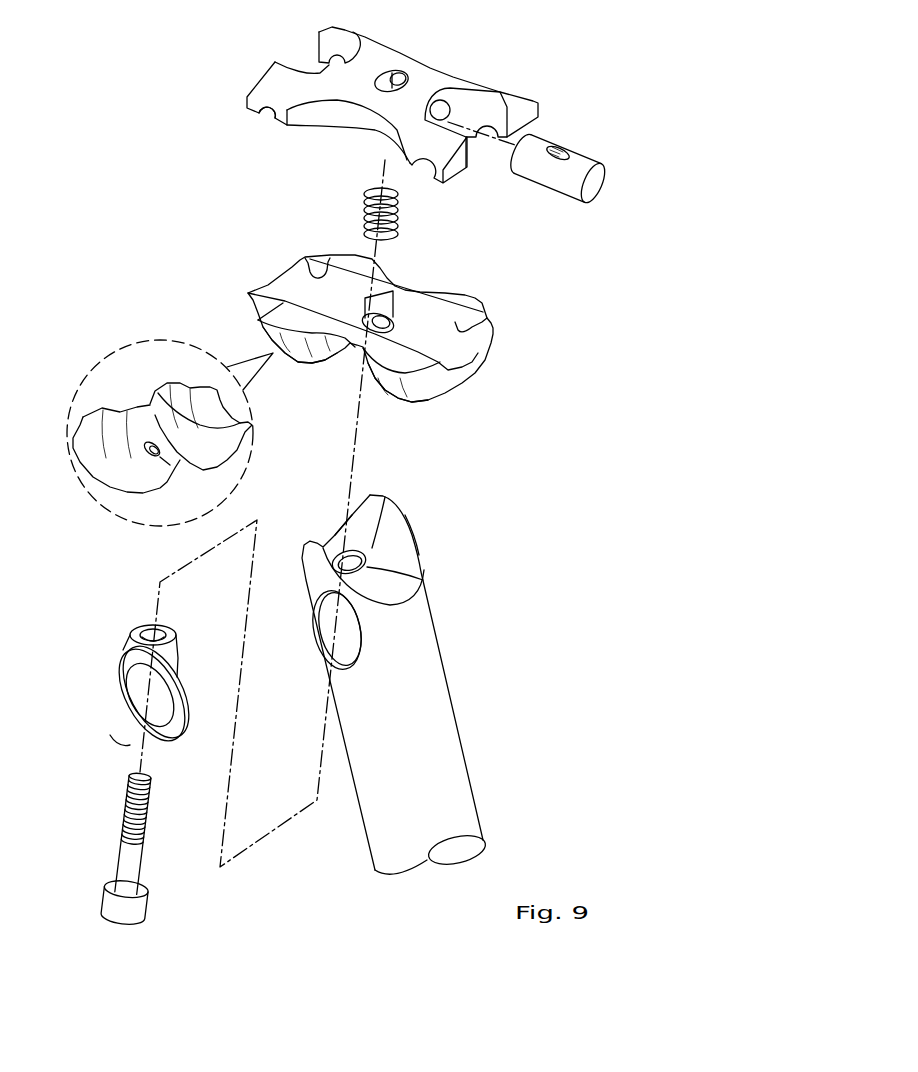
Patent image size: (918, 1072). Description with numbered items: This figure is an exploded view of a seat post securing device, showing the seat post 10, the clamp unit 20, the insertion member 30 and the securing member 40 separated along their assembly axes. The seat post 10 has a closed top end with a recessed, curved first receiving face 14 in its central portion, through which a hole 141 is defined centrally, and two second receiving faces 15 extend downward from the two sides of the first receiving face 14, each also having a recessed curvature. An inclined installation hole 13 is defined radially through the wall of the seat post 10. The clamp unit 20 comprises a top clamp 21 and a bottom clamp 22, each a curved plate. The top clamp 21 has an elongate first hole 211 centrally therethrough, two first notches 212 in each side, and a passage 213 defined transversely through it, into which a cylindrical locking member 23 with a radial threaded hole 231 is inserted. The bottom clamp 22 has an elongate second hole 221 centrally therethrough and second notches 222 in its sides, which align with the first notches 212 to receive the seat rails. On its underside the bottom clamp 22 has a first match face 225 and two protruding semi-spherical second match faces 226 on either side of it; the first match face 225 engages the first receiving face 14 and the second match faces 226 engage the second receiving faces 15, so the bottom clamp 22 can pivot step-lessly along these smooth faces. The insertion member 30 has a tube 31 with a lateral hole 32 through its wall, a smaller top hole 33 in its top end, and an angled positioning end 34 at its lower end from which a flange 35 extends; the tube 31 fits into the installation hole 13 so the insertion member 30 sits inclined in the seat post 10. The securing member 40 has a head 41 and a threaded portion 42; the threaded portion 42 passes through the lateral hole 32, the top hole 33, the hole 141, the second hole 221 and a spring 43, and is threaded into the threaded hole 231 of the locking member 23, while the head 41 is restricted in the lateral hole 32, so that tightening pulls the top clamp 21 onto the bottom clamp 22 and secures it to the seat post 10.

The seat post 10 is at (447, 737).
The installation hole 13 is at (330, 613).
The first receiving face 14 is at (378, 508).
The second receiving faces 15 is at (330, 550).
The hole 141 is at (423, 580).
The clamp unit 20 is at (124, 163).
The top clamp 21 is at (251, 52).
The first hole 211 is at (400, 73).
The first notches 212 is at (270, 117).
The passage 213 is at (440, 110).
The bottom clamp 22 is at (267, 261).
The second hole 221 is at (390, 320).
The second notches 222 is at (323, 272).
The first match face 225 is at (322, 375).
The second match faces 226 is at (360, 375).
The locking member 23 is at (560, 171).
The threaded hole 231 is at (563, 150).
The insertion member 30 is at (106, 652).
The tube 31 is at (173, 657).
The lateral hole 32 is at (140, 693).
The top hole 33 is at (147, 632).
The positioning end 34 is at (129, 722).
The flange 35 is at (182, 687).
The securing member 40 is at (104, 829).
The head 41 is at (124, 903).
The threaded portion 42 is at (133, 833).
The spring 43 is at (400, 220).